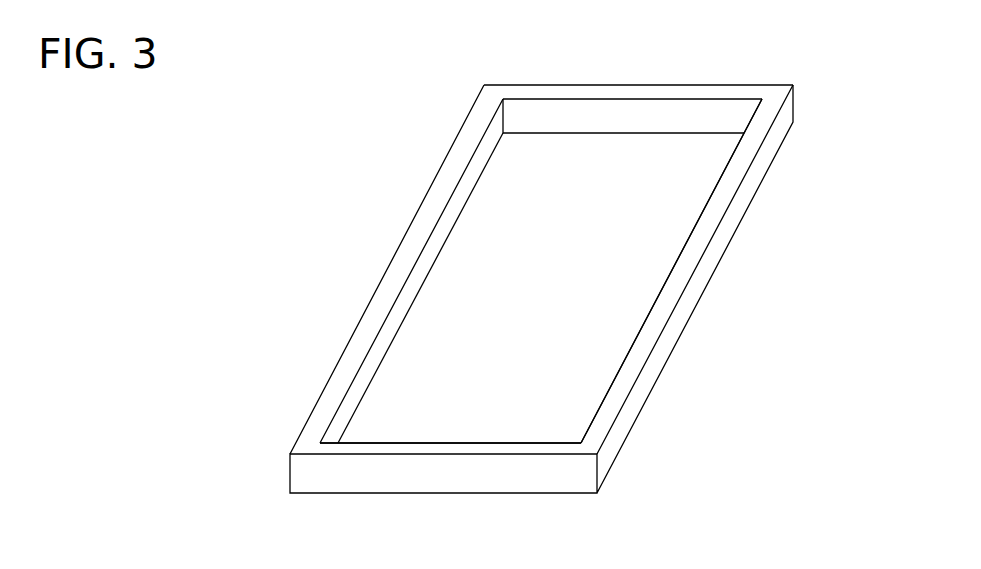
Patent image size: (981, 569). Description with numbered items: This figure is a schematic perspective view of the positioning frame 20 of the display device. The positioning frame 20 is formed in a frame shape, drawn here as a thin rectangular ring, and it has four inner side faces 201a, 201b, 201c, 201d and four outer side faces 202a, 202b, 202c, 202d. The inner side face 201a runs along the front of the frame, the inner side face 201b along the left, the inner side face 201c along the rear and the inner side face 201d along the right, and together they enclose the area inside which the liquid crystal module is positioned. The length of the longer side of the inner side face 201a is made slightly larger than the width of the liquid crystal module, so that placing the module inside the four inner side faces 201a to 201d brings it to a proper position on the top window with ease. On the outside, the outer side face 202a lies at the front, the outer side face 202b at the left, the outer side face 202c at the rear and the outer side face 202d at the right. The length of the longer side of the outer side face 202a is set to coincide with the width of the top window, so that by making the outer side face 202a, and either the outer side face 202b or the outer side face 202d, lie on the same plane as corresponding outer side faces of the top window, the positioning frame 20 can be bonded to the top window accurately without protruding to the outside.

The positioning frame 20 is at (290, 458).
The inner side face 201a is at (471, 420).
The inner side face 201b is at (463, 251).
The inner side face 201c is at (618, 146).
The inner side face 201d is at (659, 257).
The outer side face 202a is at (435, 518).
The outer side face 202b is at (382, 255).
The outer side face 202c is at (634, 70).
The outer side face 202d is at (741, 256).